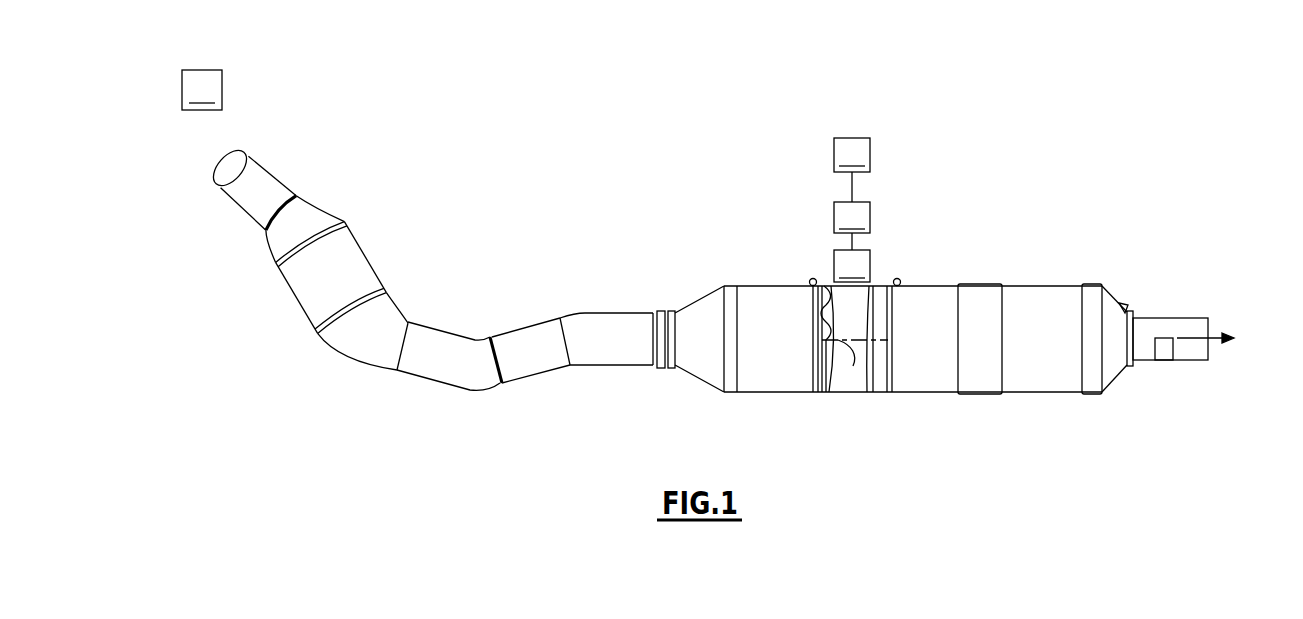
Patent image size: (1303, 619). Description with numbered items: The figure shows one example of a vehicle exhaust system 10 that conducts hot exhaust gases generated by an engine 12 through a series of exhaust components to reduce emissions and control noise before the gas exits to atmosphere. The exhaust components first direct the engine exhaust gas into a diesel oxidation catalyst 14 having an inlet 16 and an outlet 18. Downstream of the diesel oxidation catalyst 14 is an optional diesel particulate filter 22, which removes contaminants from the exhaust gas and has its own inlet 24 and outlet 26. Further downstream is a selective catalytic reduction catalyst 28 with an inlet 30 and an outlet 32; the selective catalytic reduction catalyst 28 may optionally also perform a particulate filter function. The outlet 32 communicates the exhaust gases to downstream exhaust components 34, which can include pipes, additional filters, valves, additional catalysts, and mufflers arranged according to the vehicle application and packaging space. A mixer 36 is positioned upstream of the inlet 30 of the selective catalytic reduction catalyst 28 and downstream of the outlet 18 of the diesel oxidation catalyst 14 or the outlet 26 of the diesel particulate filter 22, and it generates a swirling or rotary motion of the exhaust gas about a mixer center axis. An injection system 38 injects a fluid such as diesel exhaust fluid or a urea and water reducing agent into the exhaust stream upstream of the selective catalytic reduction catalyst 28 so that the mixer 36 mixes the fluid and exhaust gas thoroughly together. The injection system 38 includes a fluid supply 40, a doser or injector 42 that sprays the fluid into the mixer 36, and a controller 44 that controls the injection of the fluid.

The vehicle exhaust system 10 is at (574, 170).
The engine 12 is at (202, 110).
The diesel oxidation catalyst (DOC) 14 is at (360, 282).
The inlet 16 is at (343, 227).
The outlet 18 is at (384, 291).
The diesel particulate filter (DPF) 22 is at (776, 393).
The inlet 24 is at (739, 393).
The outlet 26 is at (813, 393).
The selective catalytic reduction (SCR) catalyst 28 is at (930, 286).
The inlet 30 is at (897, 393).
The outlet 32 is at (958, 394).
The downstream exhaust components 34 is at (1077, 285).
The mixer 36 is at (884, 286).
The injection system 38 is at (818, 209).
The fluid supply 40 is at (852, 217).
The doser or injector 42 is at (852, 266).
The controller 44 is at (852, 155).